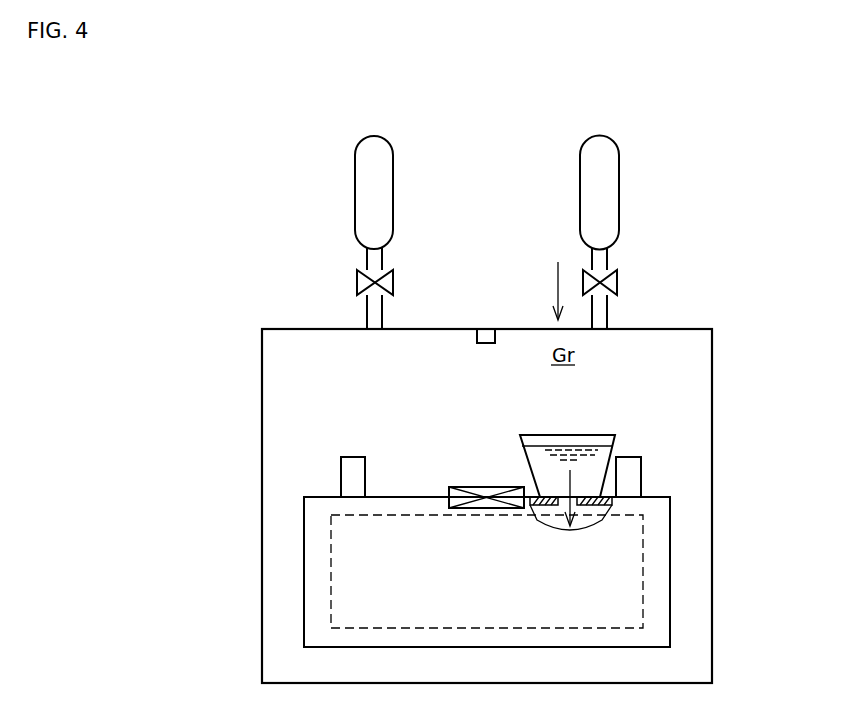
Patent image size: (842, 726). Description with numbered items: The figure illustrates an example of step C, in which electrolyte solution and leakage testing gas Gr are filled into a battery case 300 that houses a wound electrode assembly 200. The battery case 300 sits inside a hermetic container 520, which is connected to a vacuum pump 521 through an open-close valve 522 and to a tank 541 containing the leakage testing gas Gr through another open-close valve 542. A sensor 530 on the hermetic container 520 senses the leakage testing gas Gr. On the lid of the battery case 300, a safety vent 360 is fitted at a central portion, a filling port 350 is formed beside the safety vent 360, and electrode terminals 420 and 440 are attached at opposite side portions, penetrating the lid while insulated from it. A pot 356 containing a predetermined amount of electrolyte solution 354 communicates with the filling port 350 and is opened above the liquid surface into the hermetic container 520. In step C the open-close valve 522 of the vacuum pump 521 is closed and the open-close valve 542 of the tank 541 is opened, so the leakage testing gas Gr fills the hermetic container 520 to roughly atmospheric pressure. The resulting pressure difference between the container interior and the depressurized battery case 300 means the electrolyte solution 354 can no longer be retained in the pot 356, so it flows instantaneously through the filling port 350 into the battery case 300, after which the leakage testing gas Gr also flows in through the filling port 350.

The vacuum pump 521 is at (394, 187).
The open-close valve 522 is at (393, 283).
The tank 541 is at (619, 187).
The open-close valve 542 is at (617, 283).
The sensor 530 is at (487, 344).
The hermetic container 520 is at (712, 364).
The electrode terminal 420 is at (349, 455).
The electrode terminal 440 is at (641, 468).
The safety vent 360 is at (470, 487).
The pot 356 is at (525, 457).
The electrolyte solution 354 is at (566, 444).
The filling port 350 is at (571, 454).
The battery case 300 is at (678, 542).
The electrode assembly 200 is at (643, 602).